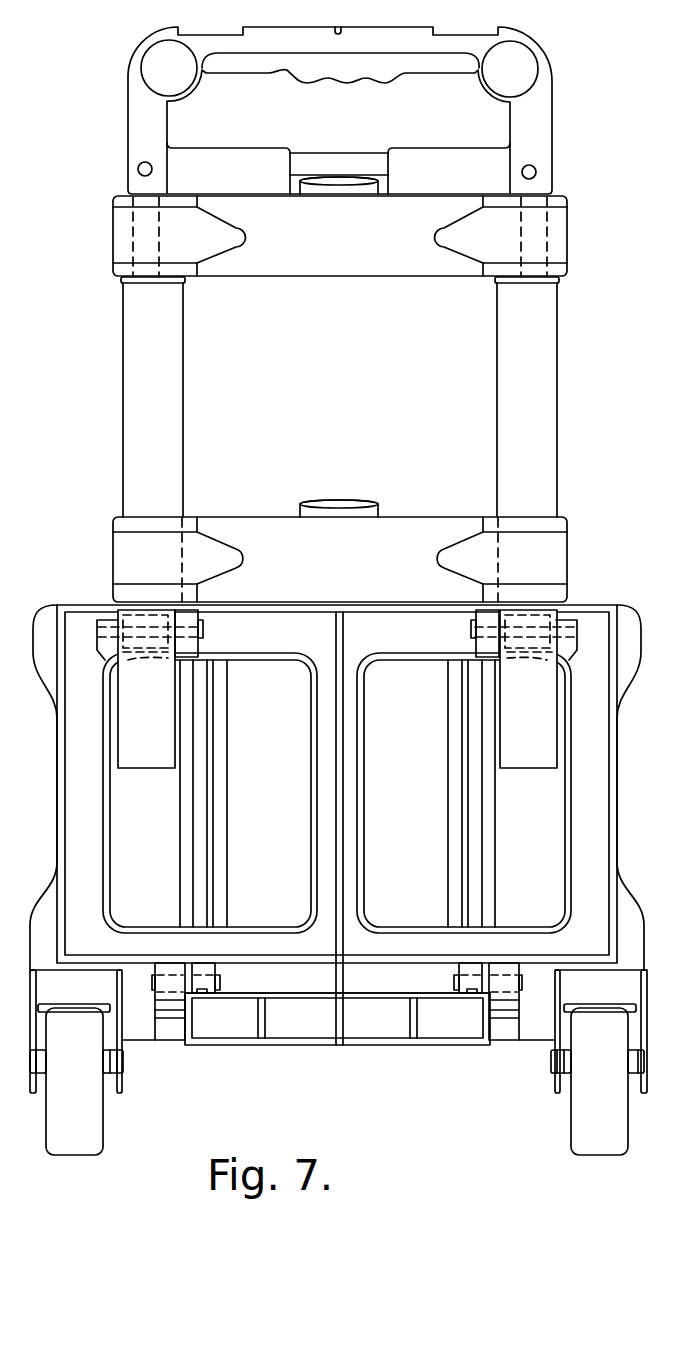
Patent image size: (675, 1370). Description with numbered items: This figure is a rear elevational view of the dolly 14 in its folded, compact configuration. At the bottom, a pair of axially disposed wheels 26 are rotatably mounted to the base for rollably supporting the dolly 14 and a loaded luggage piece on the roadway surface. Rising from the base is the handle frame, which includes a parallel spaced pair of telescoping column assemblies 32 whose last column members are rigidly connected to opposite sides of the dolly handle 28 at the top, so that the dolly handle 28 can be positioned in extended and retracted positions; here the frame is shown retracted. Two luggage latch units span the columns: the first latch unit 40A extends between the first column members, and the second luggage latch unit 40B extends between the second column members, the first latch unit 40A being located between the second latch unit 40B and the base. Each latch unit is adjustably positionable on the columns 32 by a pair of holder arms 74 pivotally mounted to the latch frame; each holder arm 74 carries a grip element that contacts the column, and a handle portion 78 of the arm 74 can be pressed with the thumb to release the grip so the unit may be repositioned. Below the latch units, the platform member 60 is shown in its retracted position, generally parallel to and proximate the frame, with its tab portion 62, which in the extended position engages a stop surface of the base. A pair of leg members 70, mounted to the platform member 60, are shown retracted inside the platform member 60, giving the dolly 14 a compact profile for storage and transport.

The dolly 14 is at (338, 598).
The wheels 26 is at (103, 1140).
The dolly handle 28 is at (552, 117).
The telescoping column assemblies 32 is at (183, 412).
The first latch unit 40A is at (397, 517).
The second luggage latch unit 40B is at (435, 277).
The platform member 60 is at (388, 810).
The tab portion 62 is at (462, 1047).
The leg members 70 is at (170, 770).
The holder arms 74 is at (196, 246).
The handle portion 78 is at (433, 240).